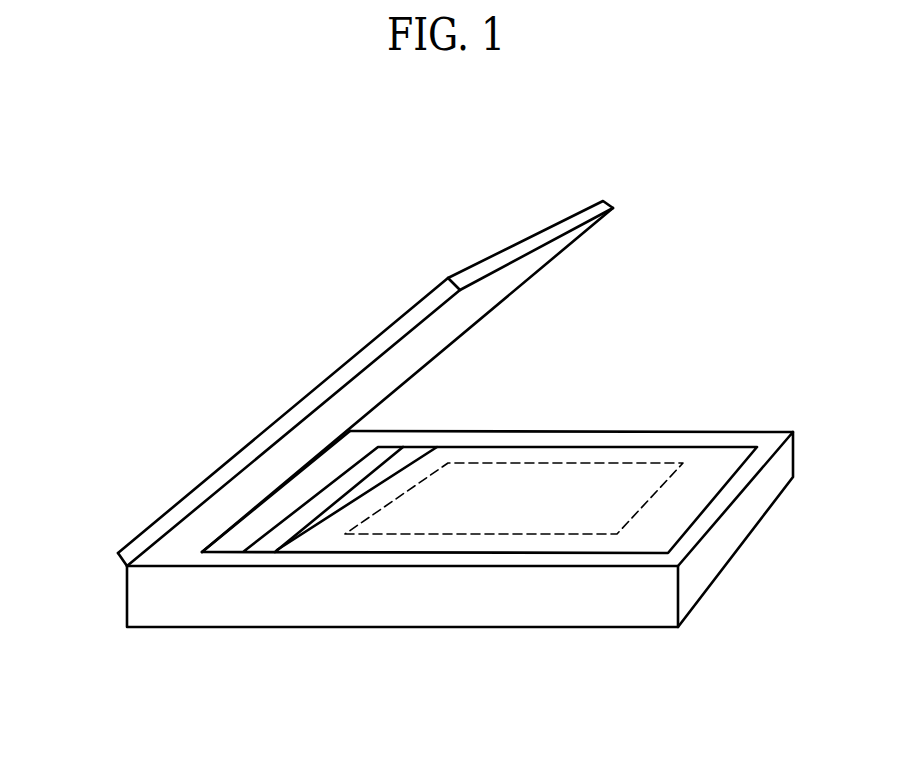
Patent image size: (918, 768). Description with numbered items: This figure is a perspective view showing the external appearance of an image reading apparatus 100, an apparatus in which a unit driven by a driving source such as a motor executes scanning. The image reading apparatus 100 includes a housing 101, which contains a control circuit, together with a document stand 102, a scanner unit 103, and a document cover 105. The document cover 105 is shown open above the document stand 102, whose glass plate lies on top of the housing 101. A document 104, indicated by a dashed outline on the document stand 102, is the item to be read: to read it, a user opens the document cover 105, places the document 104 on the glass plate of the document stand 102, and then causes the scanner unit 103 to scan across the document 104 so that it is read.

The image reading apparatus 100 is at (292, 249).
The housing 101 is at (130, 592).
The document stand 102 is at (718, 458).
The scanner unit 103 is at (285, 540).
The document 104 is at (565, 478).
The document cover 105 is at (504, 250).